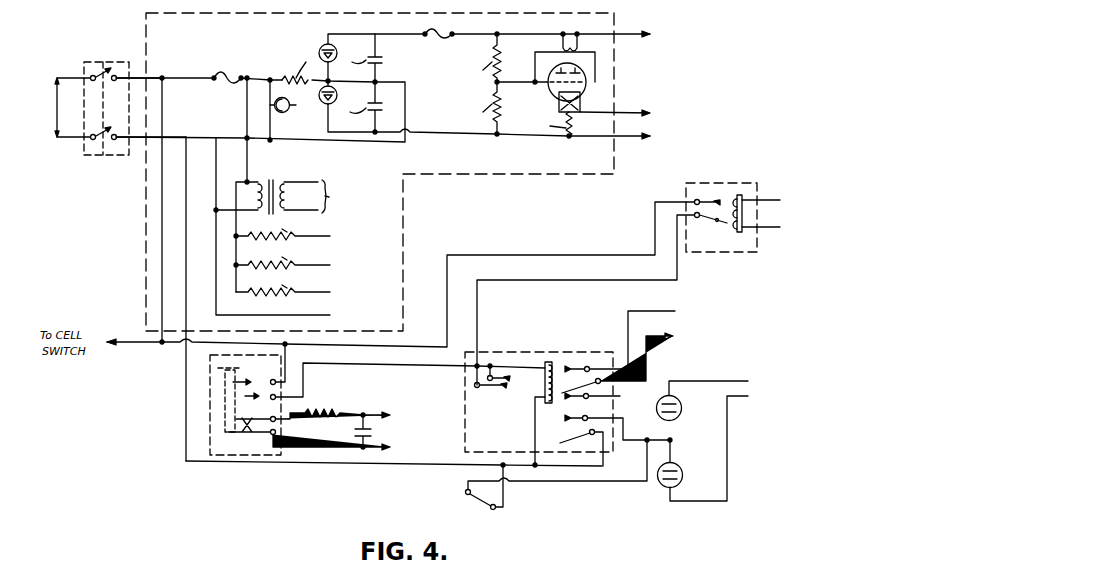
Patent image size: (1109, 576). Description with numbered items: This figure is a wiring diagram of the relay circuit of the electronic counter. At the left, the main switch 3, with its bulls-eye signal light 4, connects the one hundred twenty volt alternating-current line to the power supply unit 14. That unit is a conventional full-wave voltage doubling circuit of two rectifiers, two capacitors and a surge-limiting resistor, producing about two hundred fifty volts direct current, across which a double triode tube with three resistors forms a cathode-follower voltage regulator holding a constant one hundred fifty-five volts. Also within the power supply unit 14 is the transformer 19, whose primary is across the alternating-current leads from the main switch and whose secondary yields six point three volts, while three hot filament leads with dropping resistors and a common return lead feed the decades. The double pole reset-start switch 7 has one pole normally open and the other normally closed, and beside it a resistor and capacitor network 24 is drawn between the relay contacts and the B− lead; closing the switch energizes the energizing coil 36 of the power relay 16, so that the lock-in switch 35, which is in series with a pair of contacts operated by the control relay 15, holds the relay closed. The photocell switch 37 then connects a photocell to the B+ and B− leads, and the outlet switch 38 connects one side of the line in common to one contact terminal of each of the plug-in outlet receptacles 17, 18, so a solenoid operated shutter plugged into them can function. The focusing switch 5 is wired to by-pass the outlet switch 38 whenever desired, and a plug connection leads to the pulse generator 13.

The main switch 3 is at (107, 159).
The bulls-eye signal light 4 is at (287, 107).
The focusing switch 5 is at (487, 513).
The reset-start switch 7 is at (331, 409).
The pulse generator 13 is at (769, 214).
The power supply unit 14 is at (412, 237).
The control relay 15 is at (745, 237).
The power relay 16 is at (603, 407).
The plug-in outlet receptacle 17 is at (681, 407).
The plug-in outlet receptacle 18 is at (679, 466).
The transformer 19 is at (282, 181).
The resistor-capacitor filter 24 is at (366, 414).
The lock-in switch 35 is at (499, 392).
The energizing coil 36 is at (556, 361).
The photocell switch 37 is at (637, 365).
The outlet switch 38 is at (577, 437).